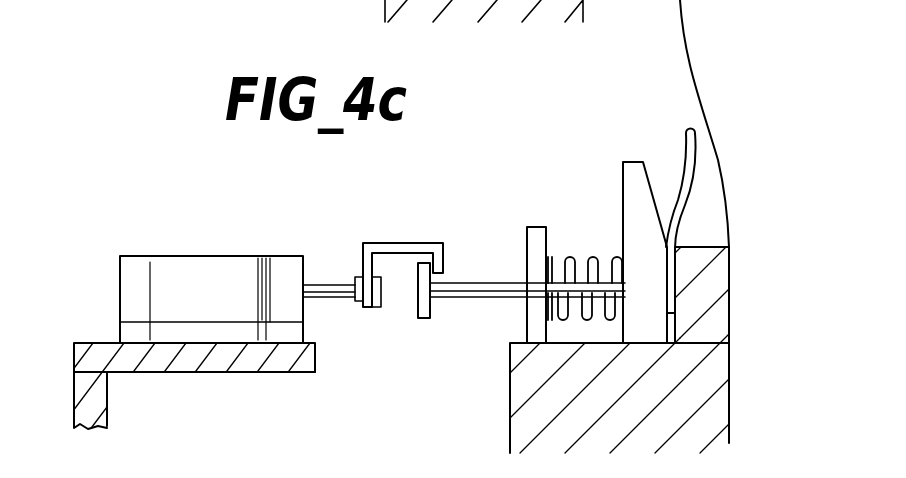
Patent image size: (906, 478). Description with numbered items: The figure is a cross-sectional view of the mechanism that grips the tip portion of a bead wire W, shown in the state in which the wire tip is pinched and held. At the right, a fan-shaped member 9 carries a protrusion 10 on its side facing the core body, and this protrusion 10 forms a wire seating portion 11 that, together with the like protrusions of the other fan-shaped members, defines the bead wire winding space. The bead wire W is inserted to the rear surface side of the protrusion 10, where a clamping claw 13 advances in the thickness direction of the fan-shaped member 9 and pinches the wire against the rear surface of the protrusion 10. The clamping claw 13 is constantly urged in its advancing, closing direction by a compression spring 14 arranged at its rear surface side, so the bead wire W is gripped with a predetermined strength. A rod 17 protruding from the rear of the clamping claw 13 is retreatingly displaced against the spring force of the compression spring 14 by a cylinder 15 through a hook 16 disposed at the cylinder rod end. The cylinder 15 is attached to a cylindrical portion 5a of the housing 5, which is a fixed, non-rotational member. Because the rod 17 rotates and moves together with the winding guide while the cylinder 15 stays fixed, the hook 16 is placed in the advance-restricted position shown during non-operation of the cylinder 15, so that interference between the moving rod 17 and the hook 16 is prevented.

The housing 5 is at (193, 306).
The cylindrical portion 5a is at (215, 367).
The cylinder 15 is at (200, 272).
The hook 16 is at (392, 243).
The rod 17 is at (470, 283).
The compression spring 14 is at (572, 257).
The clamping claw 13 is at (623, 217).
The bead wire W is at (695, 173).
The wire seating portion 11 is at (701, 239).
The protrusion 10 is at (713, 283).
The fan-shaped member 9 is at (734, 353).